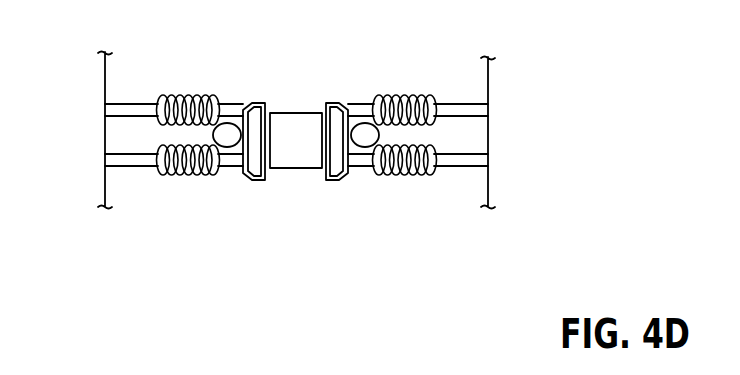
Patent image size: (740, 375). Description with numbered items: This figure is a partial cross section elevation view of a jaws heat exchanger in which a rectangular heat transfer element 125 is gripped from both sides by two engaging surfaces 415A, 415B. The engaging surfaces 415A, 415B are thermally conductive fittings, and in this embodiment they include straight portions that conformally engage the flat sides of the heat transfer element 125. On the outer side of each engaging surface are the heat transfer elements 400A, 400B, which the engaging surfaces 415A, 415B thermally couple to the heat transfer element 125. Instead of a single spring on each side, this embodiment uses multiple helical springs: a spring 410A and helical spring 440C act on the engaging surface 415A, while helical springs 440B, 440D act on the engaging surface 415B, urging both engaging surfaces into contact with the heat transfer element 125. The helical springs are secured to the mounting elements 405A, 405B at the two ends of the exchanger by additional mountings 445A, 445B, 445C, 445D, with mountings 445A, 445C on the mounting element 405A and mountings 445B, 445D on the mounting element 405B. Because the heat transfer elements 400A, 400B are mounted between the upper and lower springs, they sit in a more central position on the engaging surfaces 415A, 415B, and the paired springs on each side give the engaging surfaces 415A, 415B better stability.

The mounting element 405A is at (98, 86).
The mounting element 405B is at (497, 109).
The additional mounting 445A is at (122, 101).
The additional mounting 445B is at (458, 102).
The additional mounting 445C is at (120, 167).
The additional mounting 445D is at (476, 170).
The spring 410A is at (168, 93).
The helical spring 440B is at (403, 93).
The helical spring 440C is at (192, 185).
The helical spring 440D is at (395, 182).
The engaging surface 415A is at (258, 95).
The engaging surface 415B is at (337, 95).
The heat transfer element 400A is at (211, 138).
The heat transfer element 400B is at (380, 138).
The heat transfer element 125 is at (302, 178).